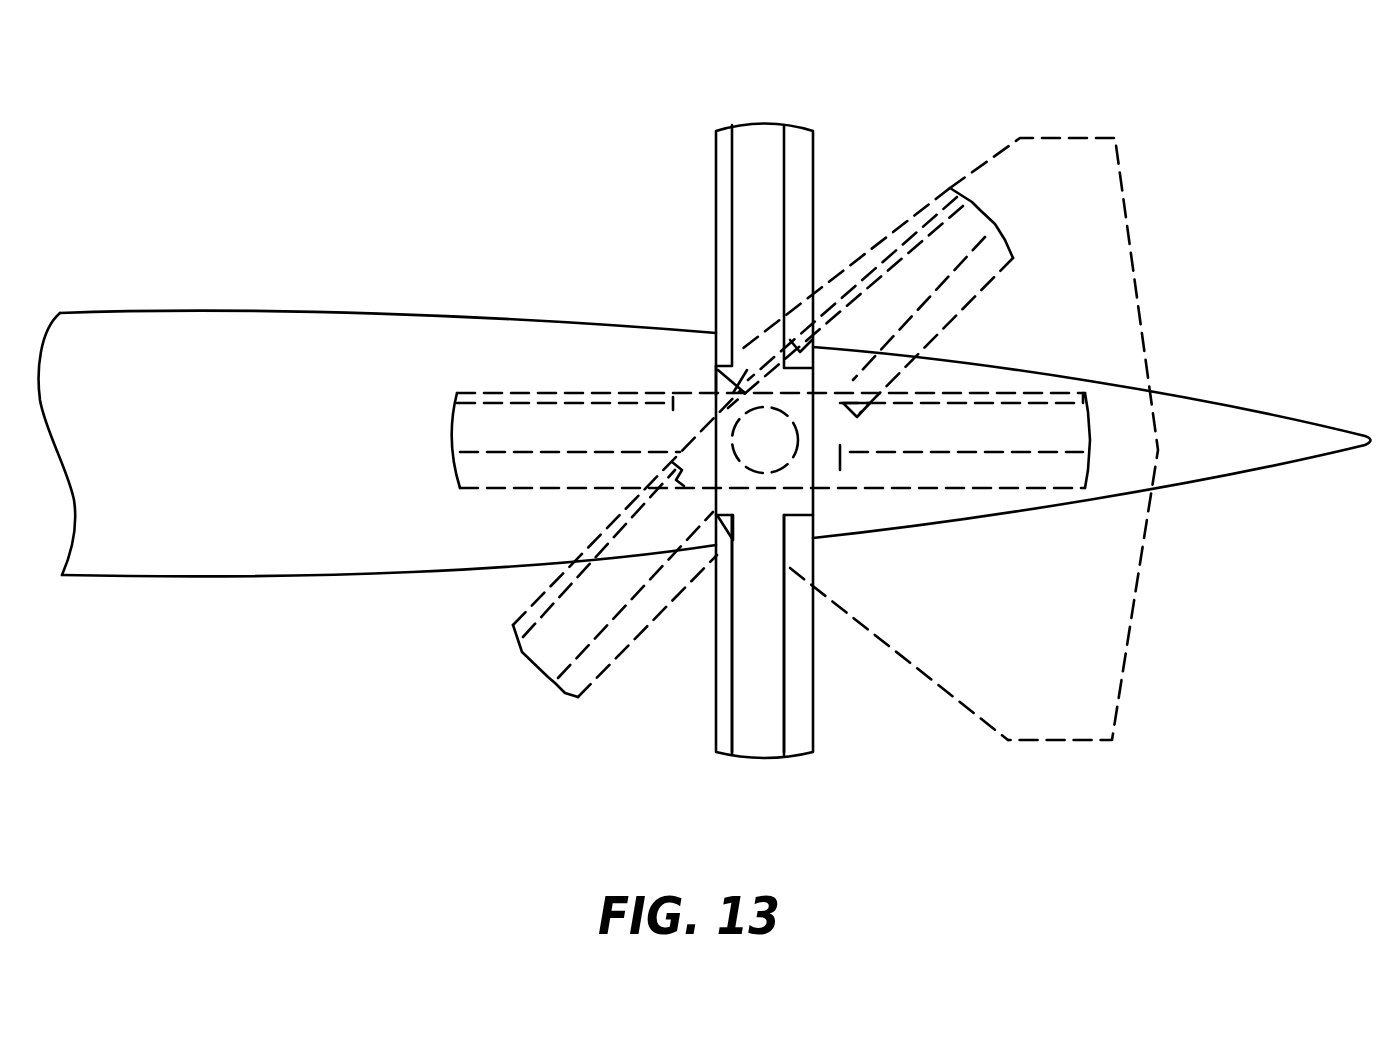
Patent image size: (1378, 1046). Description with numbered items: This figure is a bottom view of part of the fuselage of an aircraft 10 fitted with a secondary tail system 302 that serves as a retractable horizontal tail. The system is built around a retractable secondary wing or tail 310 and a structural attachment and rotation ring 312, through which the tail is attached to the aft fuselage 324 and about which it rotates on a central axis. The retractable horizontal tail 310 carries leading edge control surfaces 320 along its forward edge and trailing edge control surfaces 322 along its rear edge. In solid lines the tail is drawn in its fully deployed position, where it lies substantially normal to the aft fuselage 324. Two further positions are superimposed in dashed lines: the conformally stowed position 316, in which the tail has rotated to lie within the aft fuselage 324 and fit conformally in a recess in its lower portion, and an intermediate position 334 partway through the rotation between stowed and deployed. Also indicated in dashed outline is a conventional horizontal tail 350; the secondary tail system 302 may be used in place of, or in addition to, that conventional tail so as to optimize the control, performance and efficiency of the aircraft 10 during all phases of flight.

The aircraft 10 is at (705, 363).
The secondary tail system 302 is at (741, 423).
The retractable horizontal tail 310 is at (750, 130).
The structural attachment and rotation ring 312 is at (735, 380).
The conformally stowed position 316 is at (470, 493).
The leading edge control surfaces 320 is at (723, 727).
The trailing edge control surfaces 322 is at (798, 682).
The aft fuselage 324 is at (129, 325).
The intermediate position 334 is at (550, 680).
The conventional horizontal tail 350 is at (1102, 210).